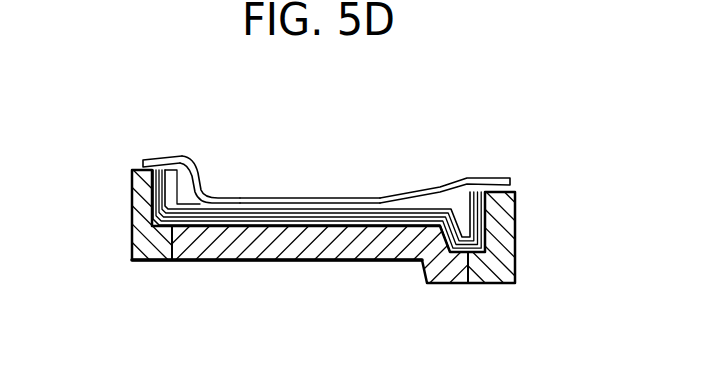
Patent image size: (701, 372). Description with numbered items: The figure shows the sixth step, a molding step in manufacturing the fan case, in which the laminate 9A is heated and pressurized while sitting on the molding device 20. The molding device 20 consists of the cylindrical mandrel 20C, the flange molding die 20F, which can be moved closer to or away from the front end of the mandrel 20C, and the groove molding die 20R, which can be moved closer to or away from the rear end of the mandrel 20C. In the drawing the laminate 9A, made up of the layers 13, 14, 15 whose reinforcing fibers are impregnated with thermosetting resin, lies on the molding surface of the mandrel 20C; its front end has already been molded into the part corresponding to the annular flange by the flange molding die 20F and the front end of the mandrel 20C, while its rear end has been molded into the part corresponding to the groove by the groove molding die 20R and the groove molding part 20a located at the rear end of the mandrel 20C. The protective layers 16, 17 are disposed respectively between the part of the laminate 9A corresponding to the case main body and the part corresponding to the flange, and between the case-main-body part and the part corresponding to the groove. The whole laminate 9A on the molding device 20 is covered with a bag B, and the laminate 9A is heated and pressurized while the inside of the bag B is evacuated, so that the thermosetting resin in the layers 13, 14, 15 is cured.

The molding device 20 is at (323, 259).
The flange molding die 20F is at (132, 193).
The groove molding die 20R is at (517, 218).
The cylindrical mandrel 20C is at (340, 263).
The groove molding part 20a is at (430, 283).
The laminate 9A is at (319, 172).
The layer 13 is at (347, 210).
The layer 14 is at (318, 207).
The layer 15 is at (318, 205).
The protective layer 16 is at (170, 157).
The protective layer 17 is at (468, 198).
The bag B is at (230, 197).